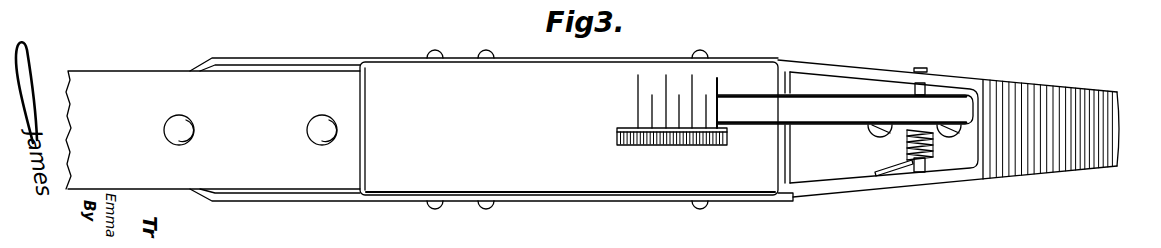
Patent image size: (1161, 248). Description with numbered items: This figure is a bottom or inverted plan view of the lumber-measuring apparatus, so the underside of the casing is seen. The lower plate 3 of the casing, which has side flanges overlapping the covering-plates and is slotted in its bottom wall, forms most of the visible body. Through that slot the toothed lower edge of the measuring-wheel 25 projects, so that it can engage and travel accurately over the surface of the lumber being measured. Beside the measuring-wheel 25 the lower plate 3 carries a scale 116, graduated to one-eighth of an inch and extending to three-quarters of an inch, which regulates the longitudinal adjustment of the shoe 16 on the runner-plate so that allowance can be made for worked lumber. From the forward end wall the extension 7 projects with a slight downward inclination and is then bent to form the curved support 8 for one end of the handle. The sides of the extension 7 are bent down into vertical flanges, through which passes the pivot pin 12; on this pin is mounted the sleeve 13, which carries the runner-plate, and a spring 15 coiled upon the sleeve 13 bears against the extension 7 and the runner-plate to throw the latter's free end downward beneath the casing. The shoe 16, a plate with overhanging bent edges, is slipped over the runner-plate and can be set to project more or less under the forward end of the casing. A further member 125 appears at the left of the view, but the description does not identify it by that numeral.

The bar 125 is at (213, 130).
The lower plate 3 is at (569, 128).
The measuring-wheel 25 is at (634, 129).
The scale 116 is at (638, 104).
The shoe 16 is at (845, 116).
The extension 7 is at (871, 75).
The pivot pin 12 is at (920, 68).
The sleeve 13 is at (930, 86).
The spring 15 is at (906, 149).
The curved support 8 is at (1054, 129).